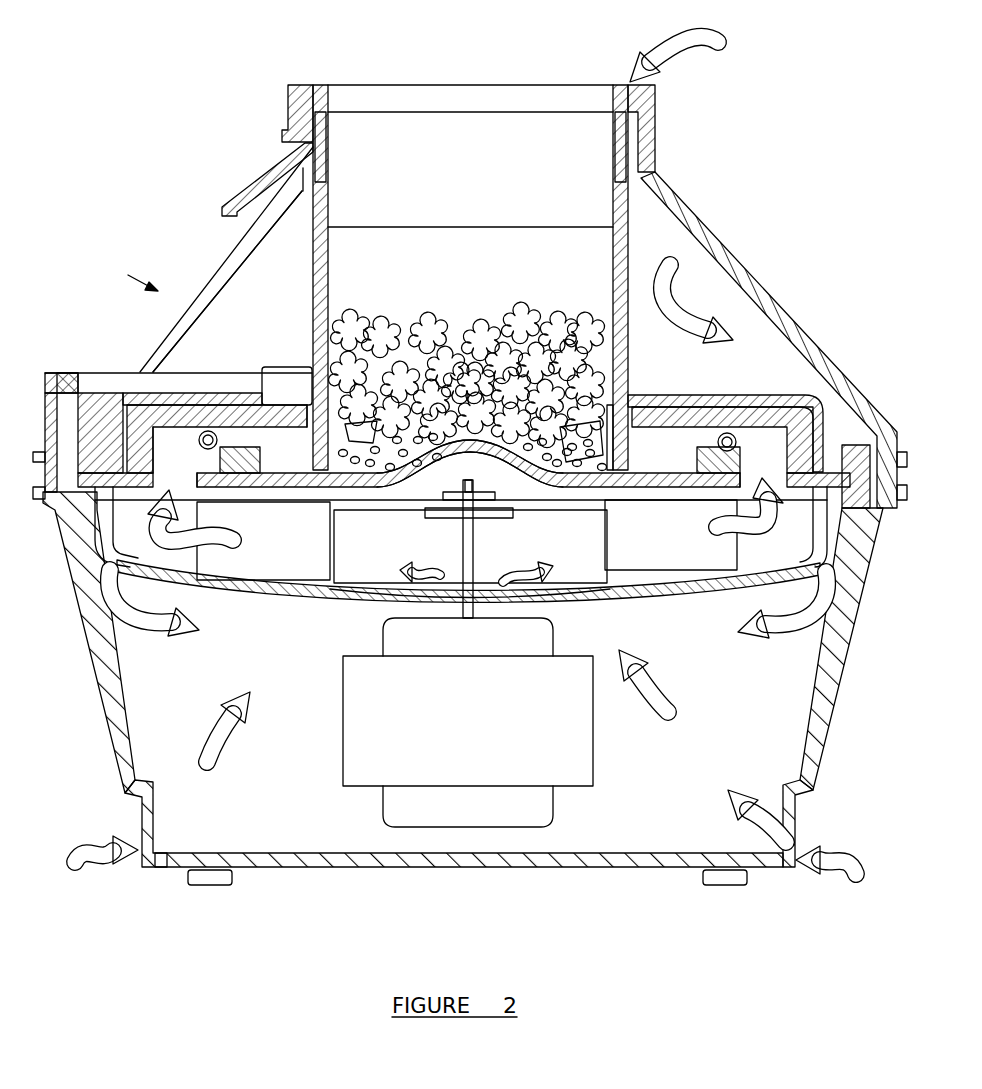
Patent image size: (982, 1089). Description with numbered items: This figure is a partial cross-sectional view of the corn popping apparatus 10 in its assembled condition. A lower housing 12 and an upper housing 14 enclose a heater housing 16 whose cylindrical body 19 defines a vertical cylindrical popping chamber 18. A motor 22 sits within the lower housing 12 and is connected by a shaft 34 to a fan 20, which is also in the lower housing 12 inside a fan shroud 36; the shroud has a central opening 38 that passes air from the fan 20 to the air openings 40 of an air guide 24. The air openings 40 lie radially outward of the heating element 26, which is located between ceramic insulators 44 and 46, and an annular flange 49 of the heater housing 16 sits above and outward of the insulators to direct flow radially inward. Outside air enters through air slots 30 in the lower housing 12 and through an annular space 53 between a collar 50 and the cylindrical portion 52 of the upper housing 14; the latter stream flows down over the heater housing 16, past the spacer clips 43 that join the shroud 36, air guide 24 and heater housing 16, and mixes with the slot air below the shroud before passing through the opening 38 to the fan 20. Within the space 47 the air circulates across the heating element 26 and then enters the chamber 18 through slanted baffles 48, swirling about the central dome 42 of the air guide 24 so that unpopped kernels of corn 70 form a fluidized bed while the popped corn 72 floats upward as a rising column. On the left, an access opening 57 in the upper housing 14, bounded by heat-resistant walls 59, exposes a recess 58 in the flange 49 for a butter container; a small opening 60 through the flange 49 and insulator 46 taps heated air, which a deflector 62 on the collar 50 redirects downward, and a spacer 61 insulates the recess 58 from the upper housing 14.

The corn popping apparatus 10 is at (772, 214).
The lower housing 12 is at (96, 664).
The upper housing 14 is at (290, 105).
The heater housing 16 is at (622, 256).
The popping chamber 18 is at (470, 198).
The cylindrical body 19 is at (314, 323).
The fan 20 is at (467, 541).
The motor 22 is at (468, 722).
The air guide 24 is at (400, 478).
The heating element 26 is at (199, 441).
The air slots 30 is at (148, 845).
The shaft 34 is at (474, 546).
The fan shroud 36 is at (258, 592).
The central opening 38 is at (430, 600).
The air openings 40 is at (192, 502).
The dome 42 is at (466, 452).
The clips 43 is at (868, 482).
The ceramic insulator 44 is at (260, 461).
The ceramic insulator 46 is at (220, 418).
The space 47 is at (446, 459).
The slanted baffles 48 is at (622, 455).
The annular flange 49 is at (193, 394).
The collar 50 is at (326, 160).
The cylindrical portion 52 is at (652, 122).
The annular space 53 is at (305, 84).
The access opening 57 is at (127, 273).
The recess 58 is at (112, 393).
The walls 59 is at (227, 281).
The opening 60 is at (277, 430).
The spacer 61 is at (63, 378).
The deflector 62 is at (266, 180).
The unpopped kernels of corn 70 is at (530, 460).
The popped corn 72 is at (528, 318).